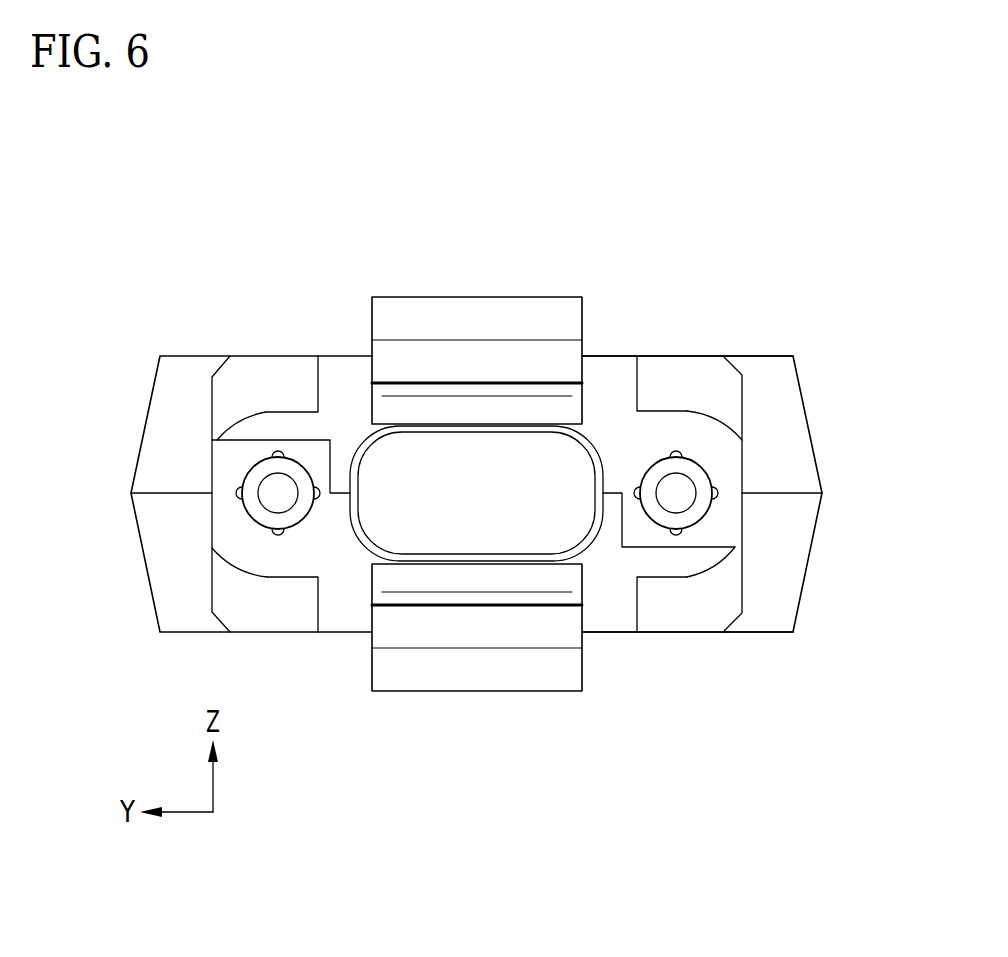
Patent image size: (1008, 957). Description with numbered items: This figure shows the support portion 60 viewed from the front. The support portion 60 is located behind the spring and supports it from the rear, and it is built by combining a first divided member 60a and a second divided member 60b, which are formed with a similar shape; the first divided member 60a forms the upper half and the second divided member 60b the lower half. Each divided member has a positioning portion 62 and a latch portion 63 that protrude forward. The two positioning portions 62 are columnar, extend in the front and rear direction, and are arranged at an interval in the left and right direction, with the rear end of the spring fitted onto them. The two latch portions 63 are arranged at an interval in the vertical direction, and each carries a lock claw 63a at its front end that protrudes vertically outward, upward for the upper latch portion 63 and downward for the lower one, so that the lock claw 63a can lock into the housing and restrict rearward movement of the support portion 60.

The support portion 60 is at (170, 256).
The first divided member 60a is at (690, 342).
The second divided member 60b is at (690, 646).
The positioning portion 62 is at (272, 498).
The latch portion 63 is at (512, 355).
The lock claw 63a is at (450, 317).